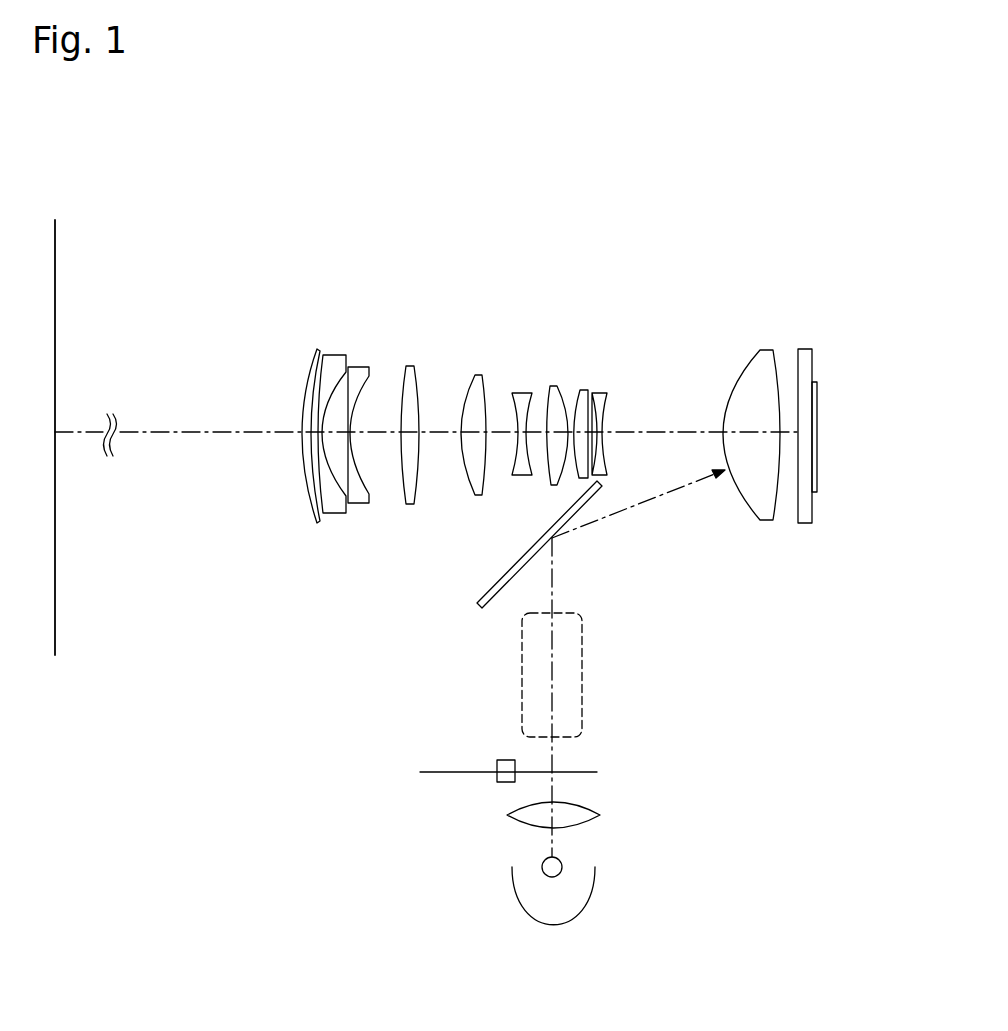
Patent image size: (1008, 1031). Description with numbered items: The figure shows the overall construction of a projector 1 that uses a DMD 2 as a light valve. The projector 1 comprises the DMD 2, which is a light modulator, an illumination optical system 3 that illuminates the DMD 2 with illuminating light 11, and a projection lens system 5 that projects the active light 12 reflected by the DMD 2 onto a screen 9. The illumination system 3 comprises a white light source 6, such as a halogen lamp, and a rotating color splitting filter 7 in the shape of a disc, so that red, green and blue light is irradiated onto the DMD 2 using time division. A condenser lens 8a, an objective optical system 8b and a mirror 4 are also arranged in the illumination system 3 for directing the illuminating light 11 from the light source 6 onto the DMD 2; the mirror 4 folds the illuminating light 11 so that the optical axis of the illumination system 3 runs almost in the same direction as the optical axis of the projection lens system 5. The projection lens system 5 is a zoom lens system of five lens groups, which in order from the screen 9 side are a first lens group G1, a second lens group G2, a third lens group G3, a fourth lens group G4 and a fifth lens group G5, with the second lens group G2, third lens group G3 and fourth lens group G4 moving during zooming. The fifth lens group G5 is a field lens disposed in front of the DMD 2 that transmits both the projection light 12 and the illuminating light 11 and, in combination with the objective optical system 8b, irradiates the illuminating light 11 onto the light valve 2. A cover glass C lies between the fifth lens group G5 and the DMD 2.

The projector 1 is at (287, 768).
The DMD 2 is at (815, 453).
The illumination optical system 3 is at (661, 525).
The mirror 4 is at (498, 578).
The projection lens system 5 is at (303, 278).
The white light source 6 is at (512, 870).
The rotating color splitting filter 7 is at (467, 772).
The condenser lens 8a is at (508, 817).
The objective optical system 8b is at (532, 697).
The screen 9 is at (56, 302).
The illuminating light 11 is at (567, 532).
The active light 12 is at (682, 431).
The cover glass C is at (812, 367).
The first lens group G1 is at (302, 337).
The second lens group G2 is at (437, 337).
The third lens group G3 is at (565, 337).
The fourth lens group G4 is at (572, 337).
The fifth lens group G5 is at (722, 337).